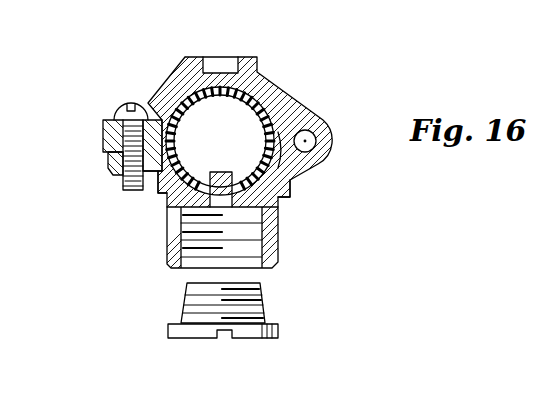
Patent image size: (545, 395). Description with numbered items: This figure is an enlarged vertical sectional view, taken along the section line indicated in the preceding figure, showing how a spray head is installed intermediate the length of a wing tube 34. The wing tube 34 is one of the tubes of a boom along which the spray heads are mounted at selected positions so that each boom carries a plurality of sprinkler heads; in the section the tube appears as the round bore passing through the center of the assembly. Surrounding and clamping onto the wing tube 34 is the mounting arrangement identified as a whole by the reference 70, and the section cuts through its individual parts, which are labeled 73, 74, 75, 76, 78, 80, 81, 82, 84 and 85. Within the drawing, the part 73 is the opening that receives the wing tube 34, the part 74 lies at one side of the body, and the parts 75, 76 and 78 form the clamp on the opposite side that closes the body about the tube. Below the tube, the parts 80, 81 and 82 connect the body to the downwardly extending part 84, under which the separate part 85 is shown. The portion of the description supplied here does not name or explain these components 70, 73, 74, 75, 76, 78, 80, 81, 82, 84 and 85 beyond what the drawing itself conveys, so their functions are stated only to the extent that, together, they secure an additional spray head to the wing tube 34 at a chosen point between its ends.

The clamp assembly 70 is at (297, 57).
The wing tube 34 is at (176, 86).
The bore 73 is at (196, 110).
The roller 74 is at (321, 124).
The clamp nut 75 is at (103, 128).
The lower nut 76 is at (109, 158).
The clamp screw 78 is at (122, 103).
The lip 80 is at (160, 176).
The pin 81 is at (223, 172).
The shoulder 82 is at (291, 197).
The threaded sleeve 84 is at (280, 260).
The base 85 is at (186, 293).